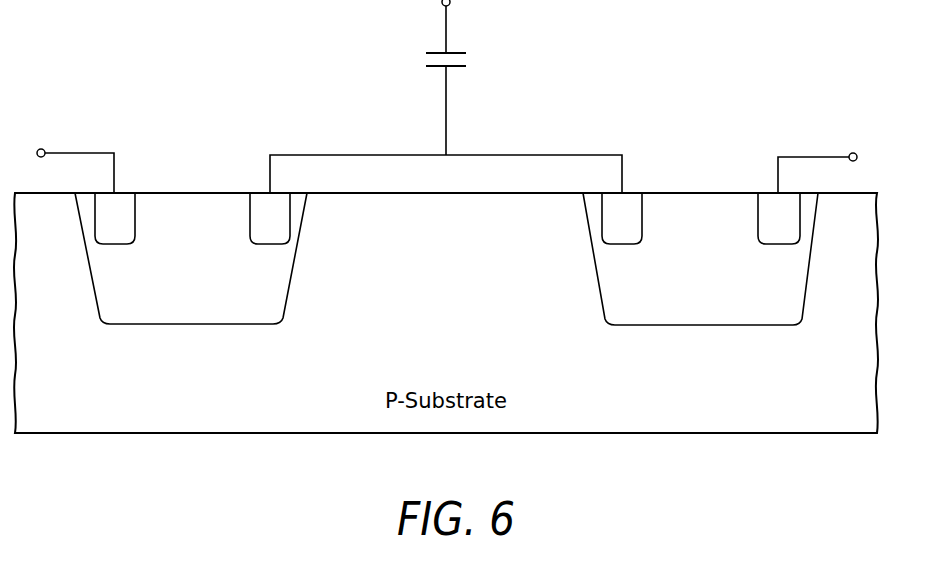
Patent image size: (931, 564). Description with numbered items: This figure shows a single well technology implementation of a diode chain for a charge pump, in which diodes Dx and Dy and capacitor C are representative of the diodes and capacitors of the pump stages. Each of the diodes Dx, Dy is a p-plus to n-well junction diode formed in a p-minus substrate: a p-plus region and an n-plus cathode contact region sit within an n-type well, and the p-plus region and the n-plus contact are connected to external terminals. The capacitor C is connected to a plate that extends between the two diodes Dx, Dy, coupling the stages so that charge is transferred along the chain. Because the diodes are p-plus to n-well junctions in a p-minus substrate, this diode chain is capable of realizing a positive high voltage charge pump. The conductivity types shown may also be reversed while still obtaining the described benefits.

The diode Dx is at (212, 166).
The diode Dy is at (680, 168).
The capacitor C is at (459, 77).